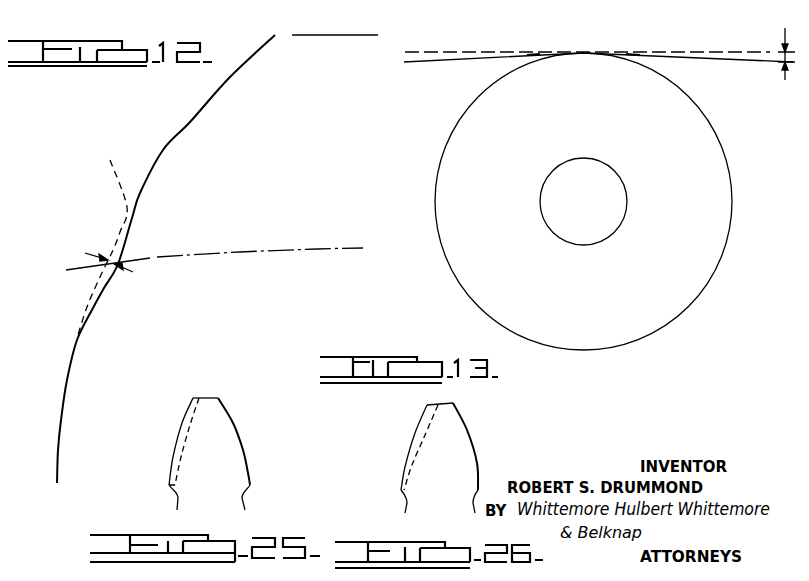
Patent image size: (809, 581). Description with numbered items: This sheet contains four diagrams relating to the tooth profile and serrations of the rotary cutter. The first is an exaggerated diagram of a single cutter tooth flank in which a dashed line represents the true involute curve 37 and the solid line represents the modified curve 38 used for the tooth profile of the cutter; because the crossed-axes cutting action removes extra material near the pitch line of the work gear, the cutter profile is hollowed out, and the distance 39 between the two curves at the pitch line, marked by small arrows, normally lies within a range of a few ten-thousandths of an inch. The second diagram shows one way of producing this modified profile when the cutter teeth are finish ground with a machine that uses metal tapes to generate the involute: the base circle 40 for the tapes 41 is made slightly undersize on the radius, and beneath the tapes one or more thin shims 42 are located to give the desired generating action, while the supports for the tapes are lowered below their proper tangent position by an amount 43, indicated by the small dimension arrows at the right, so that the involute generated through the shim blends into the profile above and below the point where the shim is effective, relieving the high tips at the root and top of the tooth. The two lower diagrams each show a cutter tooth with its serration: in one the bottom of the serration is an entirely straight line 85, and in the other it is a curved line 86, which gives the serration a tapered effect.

In FIG. 12, the true involute curve 37 is at (102, 237).
In FIG. 12, the modified curve 38 is at (139, 193).
In FIG. 12, the distance between curves at pitch line 39 is at (106, 257).
In FIG. 13, the base circle 40 is at (722, 148).
In FIG. 13, the tapes 41 is at (722, 63).
In FIG. 13, the shims 42 is at (632, 56).
In FIG. 13, the amount of lowering of tape supports 43 is at (778, 52).
In FIG. 25, the straight serration bottom line 85 is at (191, 428).
In FIG. 26, the curved serration bottom line 86 is at (420, 435).